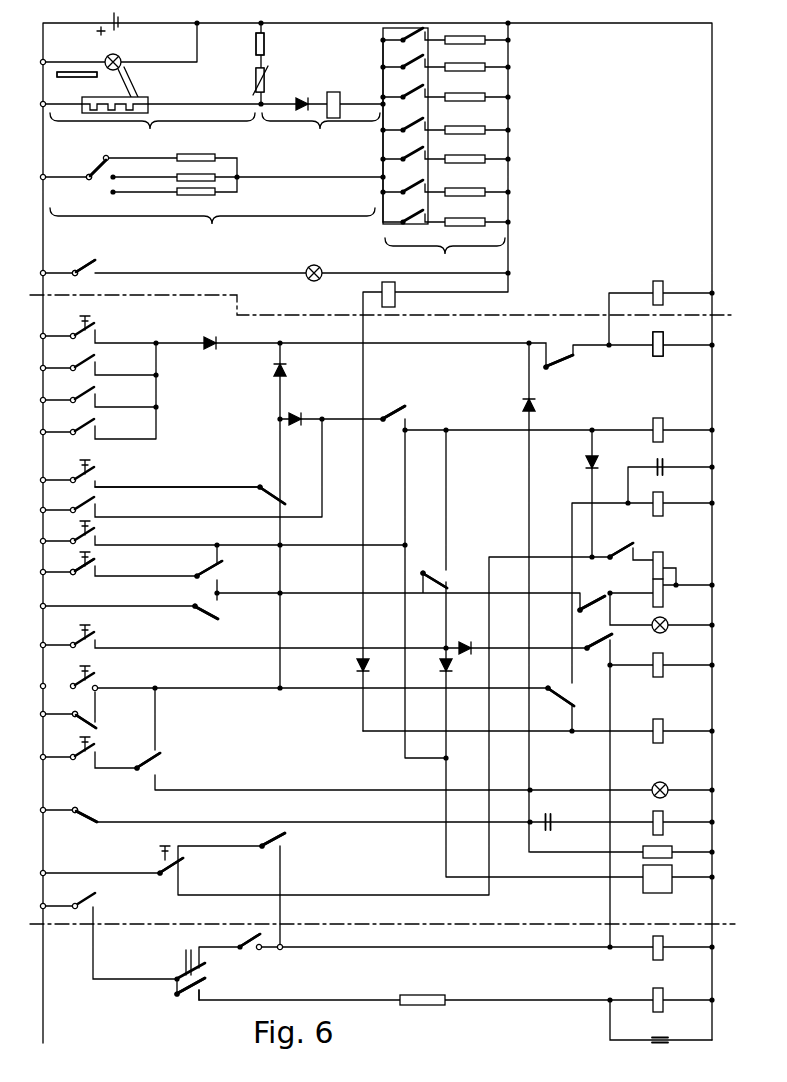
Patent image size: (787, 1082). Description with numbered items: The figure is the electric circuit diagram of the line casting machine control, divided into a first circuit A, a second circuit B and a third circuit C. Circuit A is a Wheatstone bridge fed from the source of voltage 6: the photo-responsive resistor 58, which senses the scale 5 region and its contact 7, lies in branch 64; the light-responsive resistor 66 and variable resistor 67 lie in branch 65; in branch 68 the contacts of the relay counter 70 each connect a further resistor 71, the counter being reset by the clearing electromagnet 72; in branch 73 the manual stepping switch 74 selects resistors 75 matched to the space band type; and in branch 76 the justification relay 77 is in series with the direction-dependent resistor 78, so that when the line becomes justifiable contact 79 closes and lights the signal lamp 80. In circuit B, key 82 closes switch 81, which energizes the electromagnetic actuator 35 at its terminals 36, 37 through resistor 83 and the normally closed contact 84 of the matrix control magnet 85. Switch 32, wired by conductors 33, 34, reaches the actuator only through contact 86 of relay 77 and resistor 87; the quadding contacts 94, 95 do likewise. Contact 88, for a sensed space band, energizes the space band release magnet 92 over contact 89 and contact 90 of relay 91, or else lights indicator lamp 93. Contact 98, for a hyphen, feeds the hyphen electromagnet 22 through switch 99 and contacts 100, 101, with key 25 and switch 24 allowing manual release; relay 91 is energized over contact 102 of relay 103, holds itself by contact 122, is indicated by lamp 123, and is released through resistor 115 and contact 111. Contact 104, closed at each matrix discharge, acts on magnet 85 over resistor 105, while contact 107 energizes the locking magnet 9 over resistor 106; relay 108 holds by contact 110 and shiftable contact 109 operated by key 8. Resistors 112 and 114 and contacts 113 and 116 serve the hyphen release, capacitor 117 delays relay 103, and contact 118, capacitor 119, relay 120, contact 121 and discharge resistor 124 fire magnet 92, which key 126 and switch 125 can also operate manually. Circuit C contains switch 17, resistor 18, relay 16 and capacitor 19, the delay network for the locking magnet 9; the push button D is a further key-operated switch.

The graduated scale 5 is at (76, 55).
The switch 7 is at (77, 71).
The source of voltage 6 is at (118, 55).
The photo-responsive resistor 58 is at (148, 104).
The branch of Wheatstone bridge 64 is at (155, 136).
The branch of Wheatstone bridge 65 is at (246, 40).
The light-responsive resistor 66 is at (276, 41).
The variable resistor 67 is at (275, 80).
The resistor 78 is at (311, 83).
The relay 77 is at (349, 87).
The branch of Wheatstone bridge 76 is at (324, 135).
The branch of Wheatstone bridge 68 is at (395, 50).
The resistor 71 is at (485, 46).
The resistor 75 is at (202, 156).
The stepping switch 74 is at (89, 182).
The branch of Wheatstone bridge 73 is at (214, 231).
The contact 79 is at (78, 257).
The signal lamp 80 is at (327, 260).
The relay counter 70 is at (395, 292).
The clearing electromagnet 72 is at (670, 279).
The terminal 36 is at (643, 338).
The terminal 37 is at (679, 338).
The electromagnetic actuator 35 is at (663, 352).
The key 82 is at (70, 320).
The switch 81 is at (96, 333).
The direction depending resistor 83 is at (208, 338).
The direction depending resistor 87 is at (273, 370).
The contact 84 is at (574, 365).
The indicator lamp 93 is at (384, 575).
The switch / diode 94 is at (302, 401).
The contact 95 is at (103, 428).
The direction dependent resistor 112 is at (306, 404).
The contact 113 is at (405, 411).
The electromagnet 22 is at (665, 425).
The conductor 33 is at (70, 465).
The switch 32 is at (96, 468).
The conductor 34 is at (197, 485).
The contact 86 is at (272, 485).
The direction depending resistor 115 is at (571, 461).
The capacitor 117 is at (664, 466).
The contact 116 is at (105, 501).
The relay 103 is at (664, 511).
The key 25 is at (69, 530).
The switch 24 is at (103, 531).
The contact 111 is at (616, 539).
The push button D is at (97, 561).
The manually operated switch 99 is at (120, 562).
The contact 100 is at (222, 571).
The contact 101 is at (445, 565).
The relay 91 is at (653, 560).
The contact 98 is at (86, 581).
The holding contact 122 is at (231, 608).
The contact 102 is at (596, 589).
The signal lamp 123 is at (666, 619).
The contact 104 is at (105, 635).
The voltage depending resistor 106 is at (462, 643).
The contact 107 is at (621, 645).
The relay 108 is at (665, 658).
The key 126 is at (68, 673).
The switch 125 is at (105, 675).
The direction dependent resistor 114 is at (357, 672).
The direction dependent resistor 105 is at (452, 672).
The contact 90 is at (562, 696).
The relay contact 121 is at (106, 728).
The space band release magnet 92 is at (675, 723).
The contact 88 is at (80, 764).
The contact 89 is at (163, 765).
The contact 118 is at (85, 818).
The capacitor 119 is at (574, 814).
The relay 120 is at (680, 816).
The resistor 124 is at (664, 850).
The key 8 is at (182, 962).
The holding contact 110 is at (287, 846).
The shiftable contact 109 is at (195, 872).
The matrix control magnet 85 is at (672, 889).
The switch 17 is at (203, 990).
The resistor 18 is at (440, 997).
The locking magnet means 9 is at (664, 960).
The relay 16 is at (653, 995).
The capacitor 19 is at (664, 1039).
The first circuit A is at (605, 159).
The second circuit B is at (490, 499).
The third circuit C is at (505, 976).